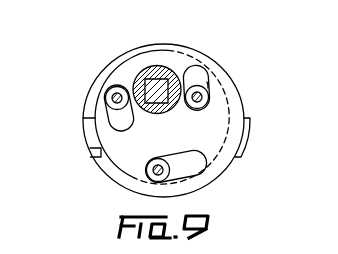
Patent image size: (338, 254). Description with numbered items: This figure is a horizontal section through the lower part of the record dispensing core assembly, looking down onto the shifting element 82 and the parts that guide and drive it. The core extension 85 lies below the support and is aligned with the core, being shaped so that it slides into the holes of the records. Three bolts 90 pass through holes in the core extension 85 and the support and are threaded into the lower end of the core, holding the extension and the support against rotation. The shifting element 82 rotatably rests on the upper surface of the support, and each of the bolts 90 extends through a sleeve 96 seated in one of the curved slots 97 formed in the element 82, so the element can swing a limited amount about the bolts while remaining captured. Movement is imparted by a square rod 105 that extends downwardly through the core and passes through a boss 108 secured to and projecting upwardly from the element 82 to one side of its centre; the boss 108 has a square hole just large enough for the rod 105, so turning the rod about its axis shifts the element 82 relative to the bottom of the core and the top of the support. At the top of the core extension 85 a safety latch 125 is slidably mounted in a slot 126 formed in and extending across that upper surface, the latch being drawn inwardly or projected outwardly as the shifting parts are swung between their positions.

The shifting element 82 is at (226, 168).
The core extension 85 is at (88, 101).
The bolts 90 is at (109, 89).
The sleeve 96 is at (208, 86).
The curved slots 97 is at (201, 68).
The square rod 105 is at (170, 67).
The boss 108 is at (143, 66).
The latch 125 is at (250, 129).
The slot 126 is at (89, 151).